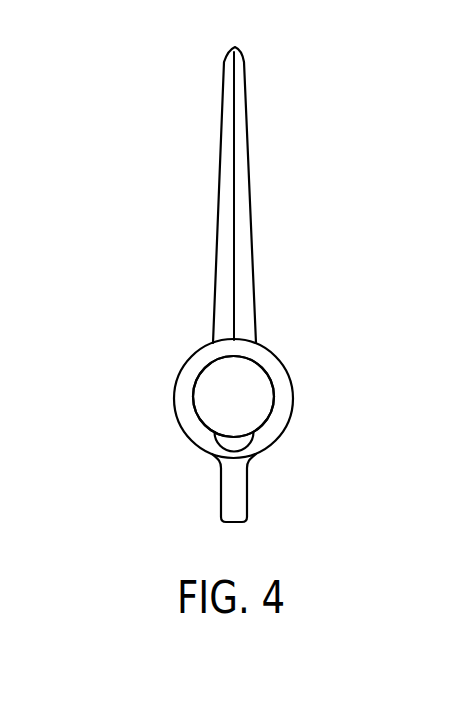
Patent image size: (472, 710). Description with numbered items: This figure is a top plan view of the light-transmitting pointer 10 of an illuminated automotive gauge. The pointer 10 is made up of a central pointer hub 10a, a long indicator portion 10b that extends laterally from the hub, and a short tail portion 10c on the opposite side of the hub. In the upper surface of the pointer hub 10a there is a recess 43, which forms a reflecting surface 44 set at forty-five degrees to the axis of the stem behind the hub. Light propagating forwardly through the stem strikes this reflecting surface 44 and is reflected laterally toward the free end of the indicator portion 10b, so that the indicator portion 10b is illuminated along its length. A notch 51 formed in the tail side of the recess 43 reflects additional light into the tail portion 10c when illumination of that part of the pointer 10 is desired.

The light-transmitting pointer 10 is at (146, 322).
The pointer hub 10a is at (275, 352).
The indicator portion 10b is at (249, 181).
The tail portion 10c is at (221, 497).
The recess 43 is at (273, 408).
The reflecting surface 44 is at (243, 407).
The notch 51 is at (250, 443).